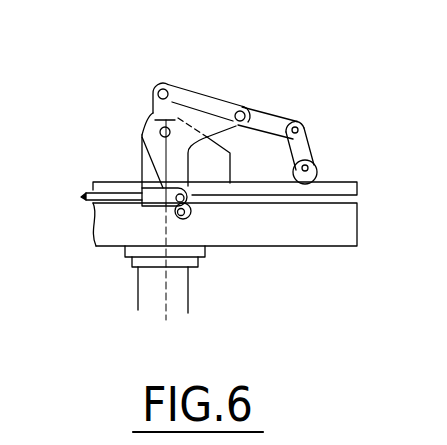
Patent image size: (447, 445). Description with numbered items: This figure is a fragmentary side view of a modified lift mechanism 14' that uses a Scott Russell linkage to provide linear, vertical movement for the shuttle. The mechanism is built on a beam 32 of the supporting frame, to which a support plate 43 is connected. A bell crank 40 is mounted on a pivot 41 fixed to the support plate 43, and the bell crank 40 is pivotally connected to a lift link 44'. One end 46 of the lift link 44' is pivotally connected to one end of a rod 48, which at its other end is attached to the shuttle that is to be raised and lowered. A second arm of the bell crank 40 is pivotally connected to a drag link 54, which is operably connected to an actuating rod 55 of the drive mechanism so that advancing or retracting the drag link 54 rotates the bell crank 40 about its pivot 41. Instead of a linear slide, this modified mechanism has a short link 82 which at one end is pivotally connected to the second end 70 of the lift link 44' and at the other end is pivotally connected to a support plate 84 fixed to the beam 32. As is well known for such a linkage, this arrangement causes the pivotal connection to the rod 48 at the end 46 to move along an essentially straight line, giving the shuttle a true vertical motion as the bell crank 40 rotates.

The lift mechanism 14' is at (282, 89).
The beam 32 is at (312, 240).
The bell crank 40 is at (143, 120).
The pivot 41 is at (160, 134).
The support plate 43 is at (143, 162).
The lift link 44' is at (206, 75).
The one end of lifting link 46 is at (153, 83).
The rod 48 is at (167, 303).
The drag link 54 is at (235, 203).
The actuating rod 55 is at (82, 199).
The second end of lifting link 70 is at (298, 118).
The short link 82 is at (310, 140).
The support plate 84 is at (312, 167).